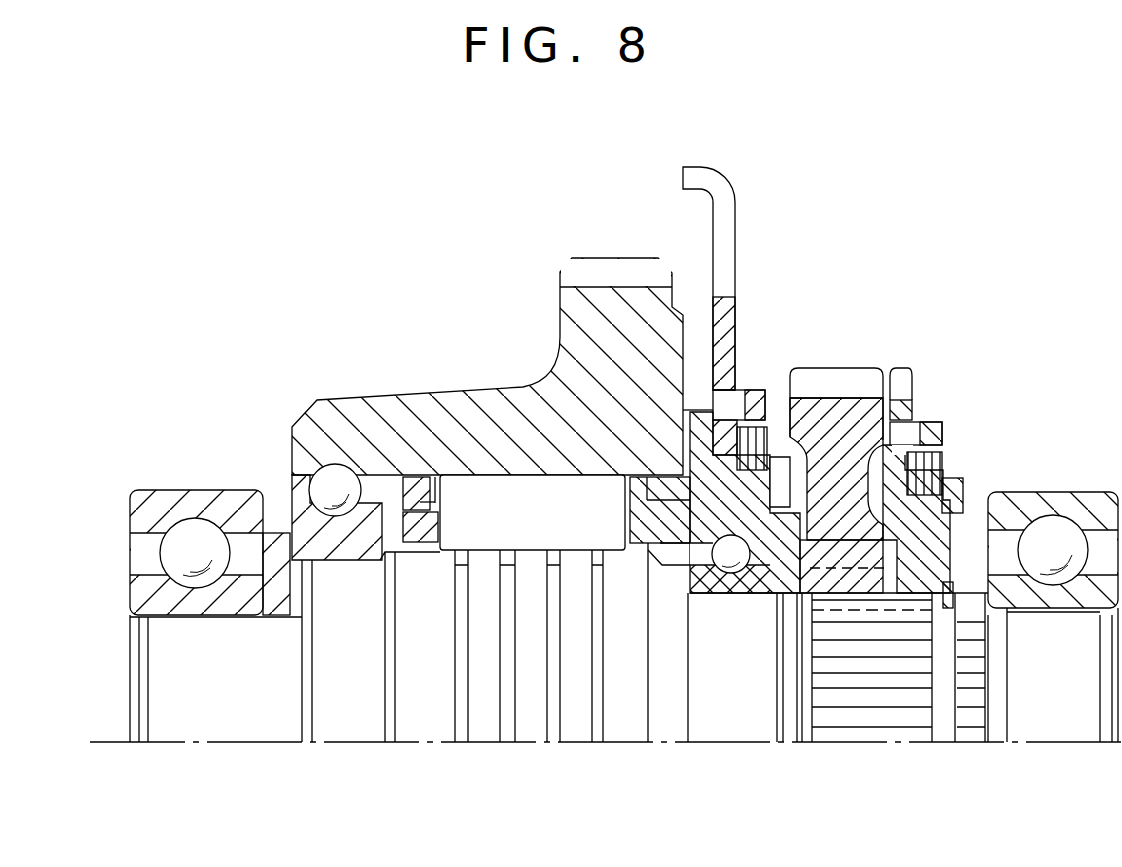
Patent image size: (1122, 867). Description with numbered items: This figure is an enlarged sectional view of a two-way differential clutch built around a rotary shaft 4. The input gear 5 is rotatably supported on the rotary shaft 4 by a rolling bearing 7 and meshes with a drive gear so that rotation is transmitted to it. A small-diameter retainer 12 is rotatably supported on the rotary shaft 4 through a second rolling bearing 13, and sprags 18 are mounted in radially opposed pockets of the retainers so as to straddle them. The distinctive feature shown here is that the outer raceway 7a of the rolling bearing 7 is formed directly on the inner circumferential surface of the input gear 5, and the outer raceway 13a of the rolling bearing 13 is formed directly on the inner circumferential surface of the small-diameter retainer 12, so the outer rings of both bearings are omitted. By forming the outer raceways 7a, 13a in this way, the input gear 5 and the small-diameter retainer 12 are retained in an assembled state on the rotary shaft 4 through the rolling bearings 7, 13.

The rotary shaft 4 is at (358, 713).
The input gear 5 is at (430, 415).
The rolling bearing 7 is at (297, 500).
The outer raceway 7a is at (335, 466).
The small-diameter retainer 12 is at (668, 530).
The rolling bearing 13 is at (735, 597).
The outer raceway 13a is at (732, 538).
The sprags 18 is at (505, 495).